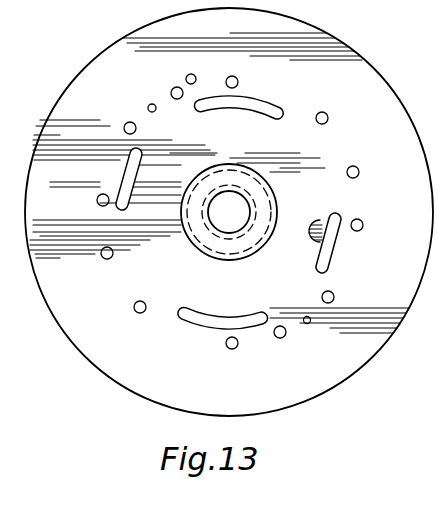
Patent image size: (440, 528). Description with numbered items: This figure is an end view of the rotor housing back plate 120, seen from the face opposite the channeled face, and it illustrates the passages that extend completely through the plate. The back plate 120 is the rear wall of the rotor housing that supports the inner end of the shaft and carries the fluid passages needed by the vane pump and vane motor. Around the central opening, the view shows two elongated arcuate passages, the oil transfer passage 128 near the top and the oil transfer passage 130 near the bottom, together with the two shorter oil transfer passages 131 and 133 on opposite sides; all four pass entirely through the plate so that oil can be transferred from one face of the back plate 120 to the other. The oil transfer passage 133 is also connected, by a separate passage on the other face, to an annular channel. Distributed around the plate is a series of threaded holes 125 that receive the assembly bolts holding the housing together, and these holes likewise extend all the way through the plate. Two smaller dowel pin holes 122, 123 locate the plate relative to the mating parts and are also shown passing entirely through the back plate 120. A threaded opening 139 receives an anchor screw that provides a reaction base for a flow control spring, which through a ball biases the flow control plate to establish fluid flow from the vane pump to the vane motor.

The rotor housing back plate 120 is at (123, 48).
The dowel pin hole 122 is at (152, 104).
The dowel pin hole 123 is at (307, 324).
The threaded holes 125 is at (130, 122).
The oil transfer passage 128 is at (262, 108).
The oil transfer passage 130 is at (203, 320).
The oil transfer passage 131 is at (132, 183).
The oil transfer passage 133 is at (332, 240).
The threaded opening 139 is at (203, 70).